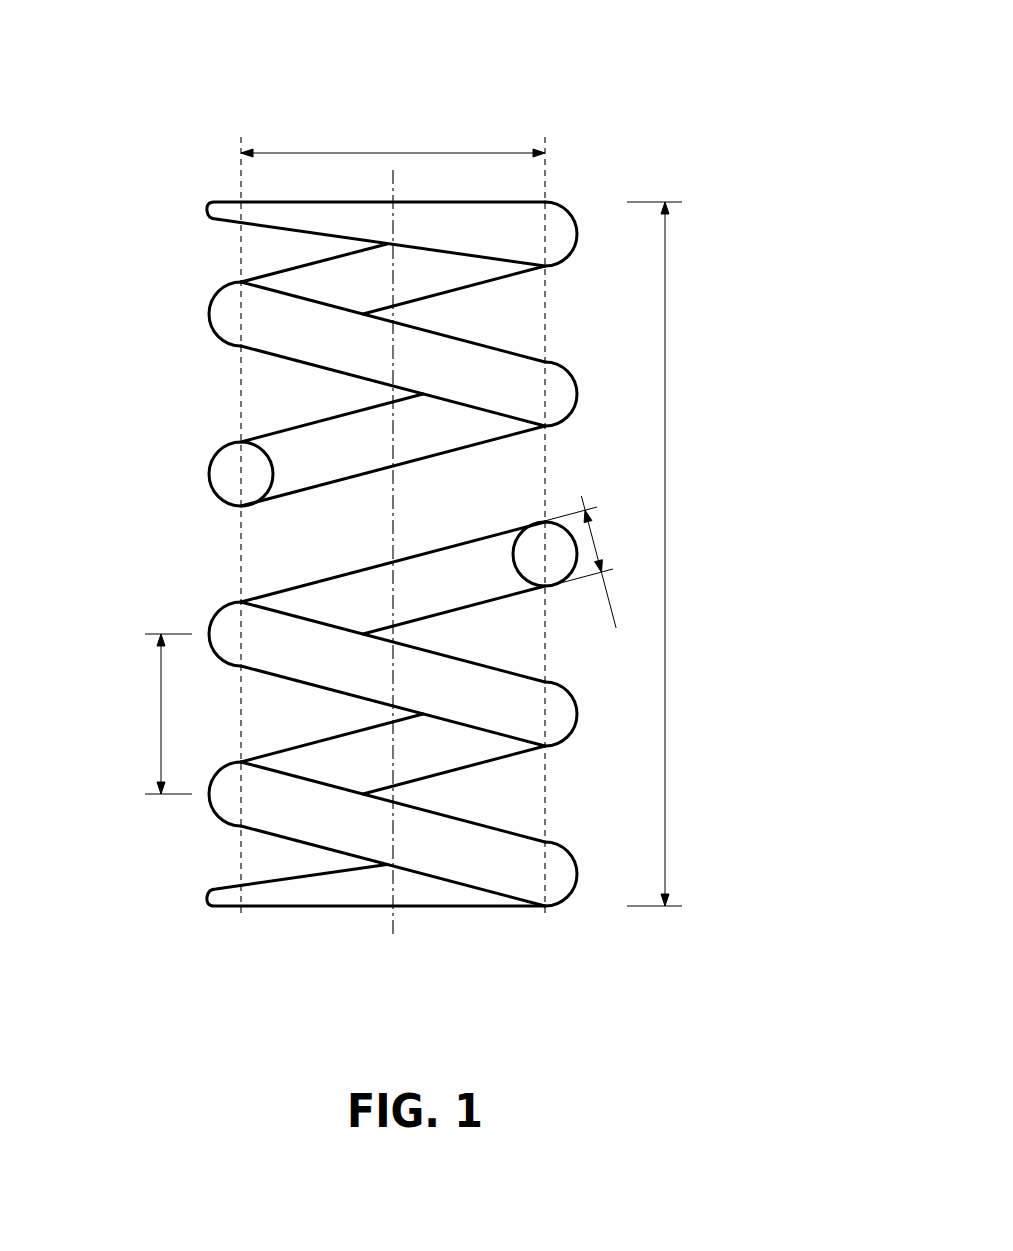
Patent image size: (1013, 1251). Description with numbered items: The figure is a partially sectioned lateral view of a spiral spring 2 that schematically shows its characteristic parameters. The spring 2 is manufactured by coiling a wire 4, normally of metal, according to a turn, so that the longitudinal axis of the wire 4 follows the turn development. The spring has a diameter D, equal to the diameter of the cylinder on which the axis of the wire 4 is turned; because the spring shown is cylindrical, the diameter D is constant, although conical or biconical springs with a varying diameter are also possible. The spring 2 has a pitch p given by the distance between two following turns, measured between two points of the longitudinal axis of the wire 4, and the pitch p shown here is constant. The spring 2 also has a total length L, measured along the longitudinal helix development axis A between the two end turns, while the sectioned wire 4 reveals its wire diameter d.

The spiral spring 2 is at (572, 155).
The wire 4 is at (278, 335).
The diameter D is at (393, 115).
The total length L is at (676, 554).
The pitch p is at (142, 714).
The wire diameter d is at (586, 562).
The longitudinal helix development axis A is at (393, 933).